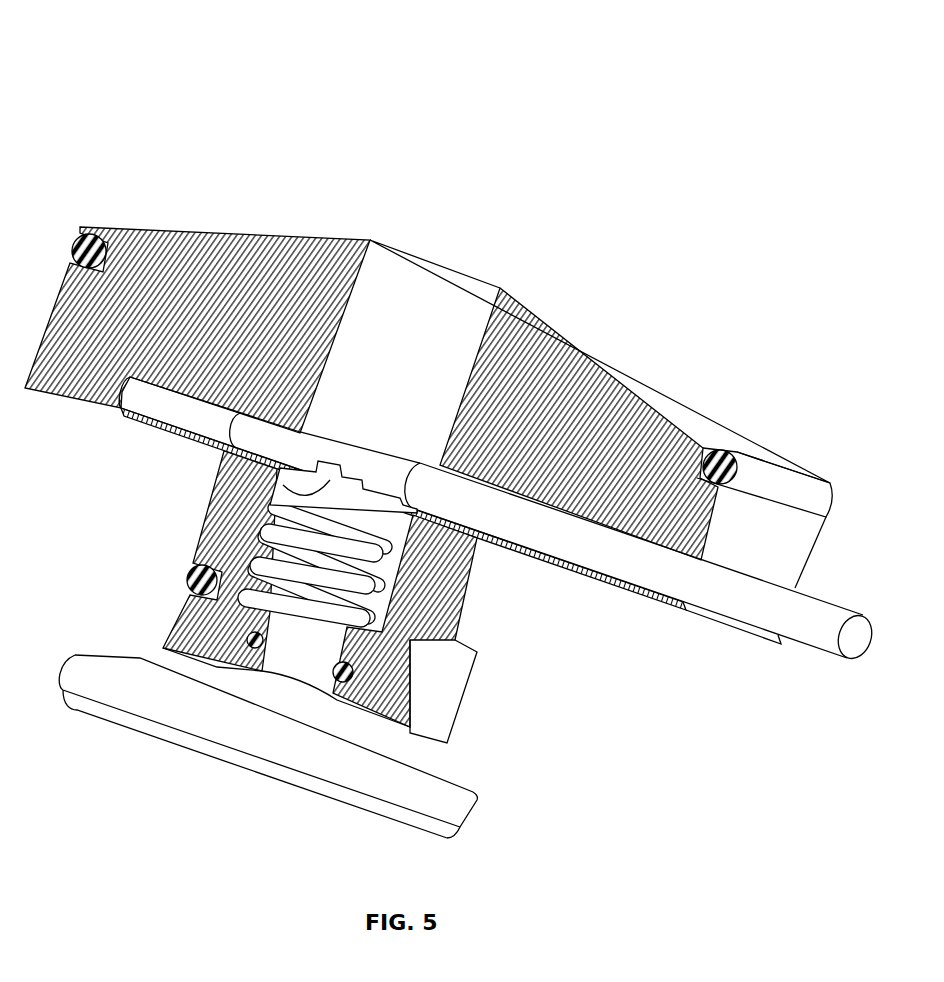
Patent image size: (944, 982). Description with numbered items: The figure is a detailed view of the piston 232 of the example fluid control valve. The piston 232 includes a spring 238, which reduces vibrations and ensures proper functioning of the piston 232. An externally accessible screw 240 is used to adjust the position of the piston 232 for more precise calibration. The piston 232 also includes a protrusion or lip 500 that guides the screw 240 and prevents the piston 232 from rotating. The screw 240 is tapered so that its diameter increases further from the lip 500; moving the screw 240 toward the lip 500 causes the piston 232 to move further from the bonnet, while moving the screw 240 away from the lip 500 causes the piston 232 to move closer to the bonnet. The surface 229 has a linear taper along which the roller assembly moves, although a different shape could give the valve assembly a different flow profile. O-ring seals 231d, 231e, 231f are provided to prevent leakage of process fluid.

The piston 232 is at (451, 433).
The surface 229 is at (603, 405).
The O-ring seal 231d is at (75, 249).
The O-ring seal 231e is at (190, 572).
The O-ring seal 231f is at (222, 668).
The spring 238 is at (380, 588).
The screw 240 is at (860, 648).
The lip 500 is at (300, 492).